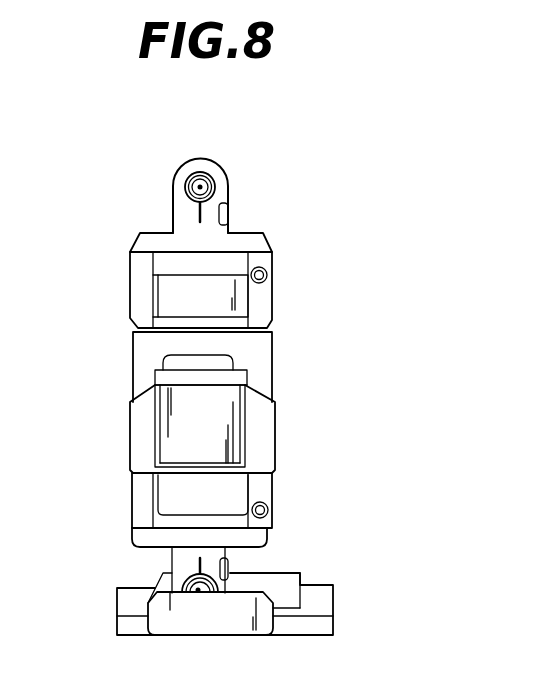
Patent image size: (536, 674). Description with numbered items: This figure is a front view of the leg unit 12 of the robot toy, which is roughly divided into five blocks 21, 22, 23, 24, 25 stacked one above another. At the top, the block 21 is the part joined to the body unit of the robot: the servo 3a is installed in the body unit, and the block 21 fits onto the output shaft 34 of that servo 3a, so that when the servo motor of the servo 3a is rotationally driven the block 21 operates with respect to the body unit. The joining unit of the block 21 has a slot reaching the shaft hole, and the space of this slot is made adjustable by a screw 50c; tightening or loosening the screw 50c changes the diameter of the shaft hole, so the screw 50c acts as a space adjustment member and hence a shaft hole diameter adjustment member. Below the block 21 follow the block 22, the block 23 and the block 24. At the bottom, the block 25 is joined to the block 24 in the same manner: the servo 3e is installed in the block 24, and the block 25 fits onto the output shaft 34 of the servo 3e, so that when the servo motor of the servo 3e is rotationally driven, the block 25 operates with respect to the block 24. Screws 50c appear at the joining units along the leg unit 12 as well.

The leg unit 12 is at (233, 164).
The output shaft 34 is at (199, 187).
The servo 3a is at (206, 186).
The screw 50c is at (230, 211).
The block 21 is at (258, 245).
The block 22 is at (263, 358).
The block 23 is at (268, 438).
The block 24 is at (266, 521).
The servo 3e is at (184, 584).
The block 25 is at (326, 627).